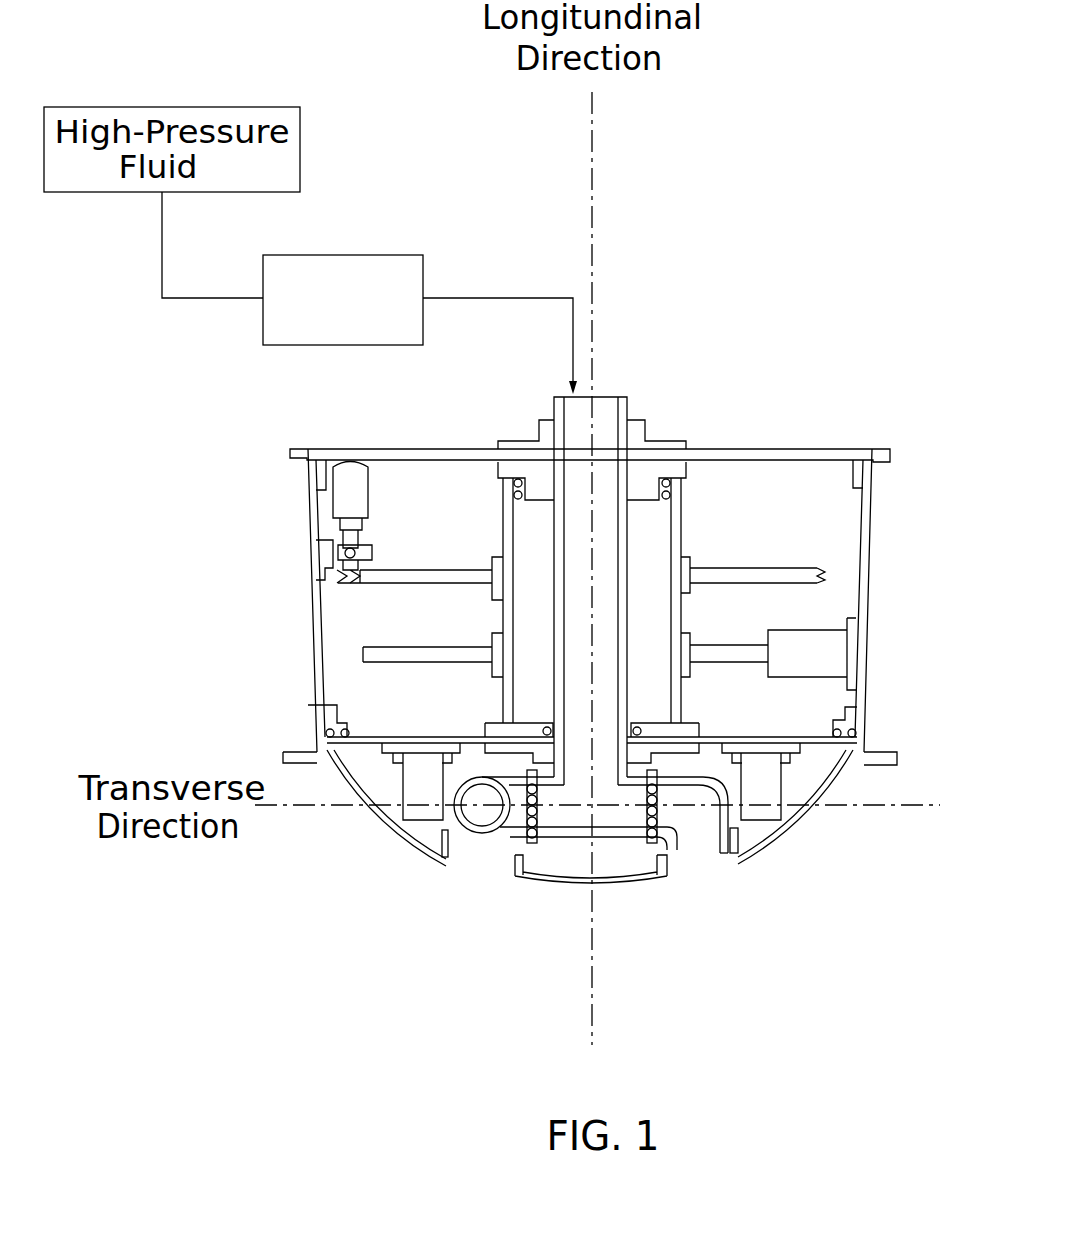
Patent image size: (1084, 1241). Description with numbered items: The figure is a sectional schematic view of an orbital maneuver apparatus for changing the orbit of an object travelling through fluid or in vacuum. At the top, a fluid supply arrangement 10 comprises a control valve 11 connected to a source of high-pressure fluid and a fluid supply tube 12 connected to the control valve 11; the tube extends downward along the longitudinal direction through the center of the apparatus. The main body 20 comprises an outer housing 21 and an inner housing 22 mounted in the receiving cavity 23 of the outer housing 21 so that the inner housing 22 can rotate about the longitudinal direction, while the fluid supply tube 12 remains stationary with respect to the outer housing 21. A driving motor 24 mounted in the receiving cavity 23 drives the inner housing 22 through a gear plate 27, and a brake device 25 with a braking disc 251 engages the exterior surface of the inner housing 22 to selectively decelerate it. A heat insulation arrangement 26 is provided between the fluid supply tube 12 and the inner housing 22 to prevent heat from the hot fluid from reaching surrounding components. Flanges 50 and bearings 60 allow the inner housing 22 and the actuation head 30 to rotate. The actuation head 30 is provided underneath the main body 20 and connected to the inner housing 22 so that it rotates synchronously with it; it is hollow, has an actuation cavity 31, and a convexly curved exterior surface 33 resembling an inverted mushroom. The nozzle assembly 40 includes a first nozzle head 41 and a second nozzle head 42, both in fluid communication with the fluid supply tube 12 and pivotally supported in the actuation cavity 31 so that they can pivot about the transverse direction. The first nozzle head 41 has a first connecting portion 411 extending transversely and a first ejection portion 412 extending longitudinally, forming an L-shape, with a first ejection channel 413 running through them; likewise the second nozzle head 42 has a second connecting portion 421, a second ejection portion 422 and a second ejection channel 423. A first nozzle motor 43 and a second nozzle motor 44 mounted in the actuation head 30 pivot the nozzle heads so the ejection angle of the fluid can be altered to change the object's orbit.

The fluid supply arrangement 10 is at (672, 380).
The control valve 11 is at (343, 300).
The fluid supply tube 12 is at (624, 395).
The main body 20 is at (270, 633).
The outer housing 21 is at (867, 557).
The inner housing 22 is at (672, 505).
The receiving cavity 23 is at (693, 562).
The driving motor 24 is at (343, 492).
The brake device 25 is at (407, 650).
The braking disc 251 is at (805, 527).
The heat insulation arrangement 26 is at (532, 533).
The gear plate 27 is at (412, 577).
The actuation head 30 is at (380, 822).
The actuation cavity 31 is at (568, 845).
The convexly curved exterior surface 33 is at (620, 887).
The nozzle assembly 40 is at (745, 837).
The first nozzle head 41 is at (468, 820).
The first connecting portion 411 is at (515, 843).
The first ejection portion 412 is at (465, 843).
The first ejection channel 413 is at (477, 808).
The second nozzle head 42 is at (673, 848).
The second connecting portion 421 is at (683, 780).
The second ejection portion 422 is at (735, 840).
The second ejection channel 423 is at (703, 843).
The first nozzle motor 43 is at (420, 773).
The second nozzle motor 44 is at (760, 783).
The flanges 50 is at (540, 438).
The bearings 60 is at (516, 482).